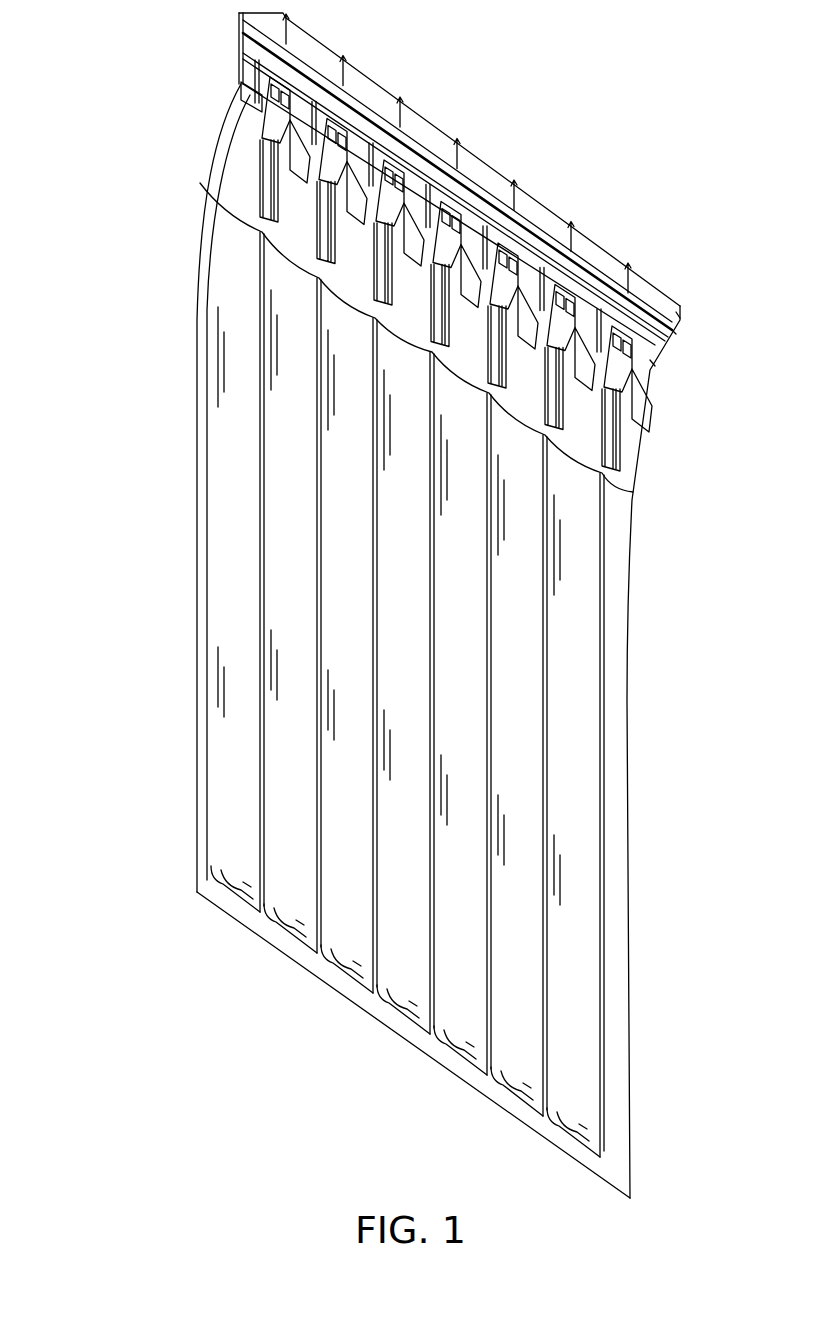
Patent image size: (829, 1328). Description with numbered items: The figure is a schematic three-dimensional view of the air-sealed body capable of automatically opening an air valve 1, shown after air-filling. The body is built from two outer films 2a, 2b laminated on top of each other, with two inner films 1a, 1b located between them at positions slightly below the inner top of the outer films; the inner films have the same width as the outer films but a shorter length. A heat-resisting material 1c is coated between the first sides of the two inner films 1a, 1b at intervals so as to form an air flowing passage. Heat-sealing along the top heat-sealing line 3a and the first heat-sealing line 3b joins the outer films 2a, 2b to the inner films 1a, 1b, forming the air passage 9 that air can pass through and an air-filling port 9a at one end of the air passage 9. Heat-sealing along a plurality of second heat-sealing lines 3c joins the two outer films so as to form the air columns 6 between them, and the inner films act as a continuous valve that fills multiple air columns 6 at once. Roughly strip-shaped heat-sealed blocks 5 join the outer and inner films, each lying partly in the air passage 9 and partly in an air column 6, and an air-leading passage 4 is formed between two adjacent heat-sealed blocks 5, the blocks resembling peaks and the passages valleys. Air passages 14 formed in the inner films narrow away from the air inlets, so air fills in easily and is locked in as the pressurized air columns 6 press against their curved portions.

The air-sealed body capable of automatically opening an air valve 1 is at (722, 276).
The inner film 1a is at (418, 130).
The inner film 1b is at (520, 220).
The heat-resisting material 1c is at (610, 385).
The outer film 2a is at (682, 319).
The outer film 2b is at (676, 335).
The top heat-sealing line 3a is at (255, 60).
The first heat-sealing line 3b is at (263, 106).
The second heat-sealing line 3c is at (602, 623).
The air-leading passage 4 is at (343, 64).
The heat-sealed block 5 is at (350, 107).
The air column 6 is at (578, 782).
The air passage 9 is at (453, 190).
The air-filling port 9a is at (652, 363).
The air passage 14 is at (528, 391).